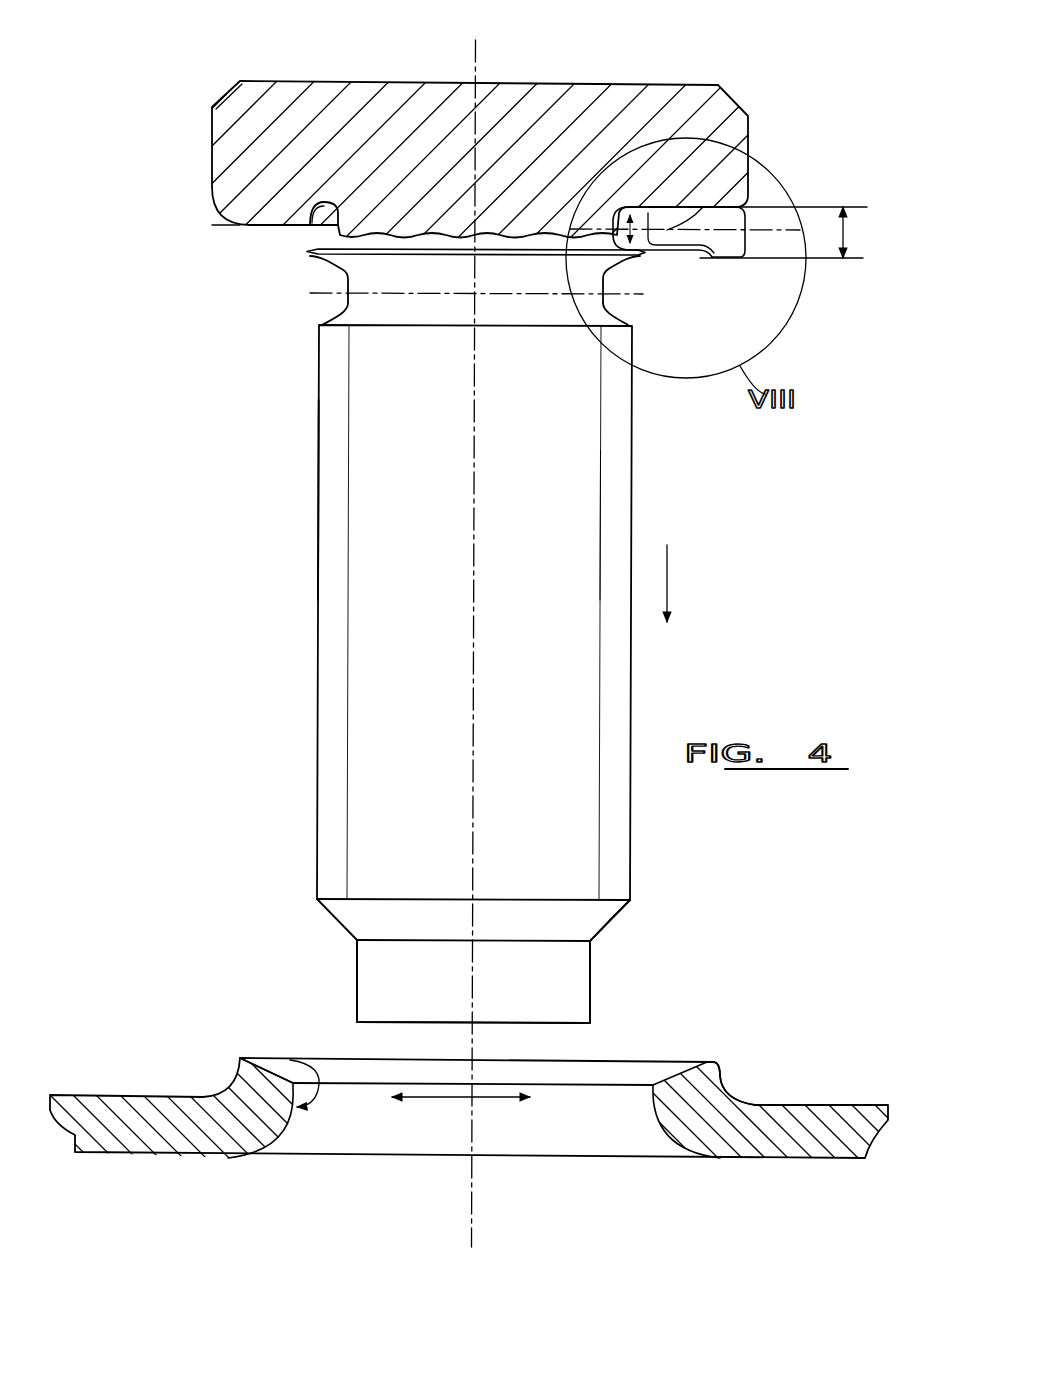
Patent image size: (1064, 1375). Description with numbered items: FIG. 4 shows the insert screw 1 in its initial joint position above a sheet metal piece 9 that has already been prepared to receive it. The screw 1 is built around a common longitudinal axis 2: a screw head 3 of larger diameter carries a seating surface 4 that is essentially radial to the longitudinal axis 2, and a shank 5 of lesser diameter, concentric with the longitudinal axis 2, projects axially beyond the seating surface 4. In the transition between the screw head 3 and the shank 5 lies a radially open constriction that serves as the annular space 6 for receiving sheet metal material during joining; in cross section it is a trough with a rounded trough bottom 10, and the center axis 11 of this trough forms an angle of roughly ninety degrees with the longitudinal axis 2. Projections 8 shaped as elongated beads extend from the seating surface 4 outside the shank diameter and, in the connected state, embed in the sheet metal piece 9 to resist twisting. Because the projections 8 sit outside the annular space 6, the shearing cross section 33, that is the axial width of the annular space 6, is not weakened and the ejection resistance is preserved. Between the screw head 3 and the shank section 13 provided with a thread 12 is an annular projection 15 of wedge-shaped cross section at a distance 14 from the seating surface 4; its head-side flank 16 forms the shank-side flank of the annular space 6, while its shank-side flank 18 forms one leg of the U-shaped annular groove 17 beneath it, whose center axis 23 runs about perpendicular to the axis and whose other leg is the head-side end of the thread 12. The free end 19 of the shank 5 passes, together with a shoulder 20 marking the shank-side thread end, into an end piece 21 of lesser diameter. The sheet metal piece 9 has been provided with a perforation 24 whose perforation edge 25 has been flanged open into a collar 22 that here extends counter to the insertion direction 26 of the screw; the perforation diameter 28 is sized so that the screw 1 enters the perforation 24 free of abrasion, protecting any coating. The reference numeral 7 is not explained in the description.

The screw 1 is at (404, 425).
The longitudinal axis 2 is at (481, 46).
The screw head 3 is at (392, 135).
The seating surface 4 is at (708, 254).
The shank 5 is at (636, 478).
The annular space 6 is at (313, 210).
The underside of head 7 is at (237, 233).
The projections 8 is at (278, 222).
The sheet metal piece 9 is at (770, 1122).
The trough bottom 10 is at (328, 204).
The center axis 11 is at (806, 234).
The thread 12 is at (615, 512).
The shank section 13 is at (316, 487).
The distance 14 is at (848, 228).
The annular projection 15 is at (305, 252).
The flank 16 is at (310, 238).
The annular groove 17 is at (347, 300).
The flank 18 is at (330, 272).
The free end 19 is at (613, 943).
The shoulder 20 is at (622, 912).
The end piece 21 is at (392, 980).
The collar 22 is at (290, 1081).
The center axis 23 is at (630, 314).
The perforation 24 is at (368, 1116).
The perforation edge 25 is at (725, 1078).
The insertion direction 26 is at (670, 580).
The perforation diameter 28 is at (537, 1060).
The shearing cross section 33 is at (632, 237).